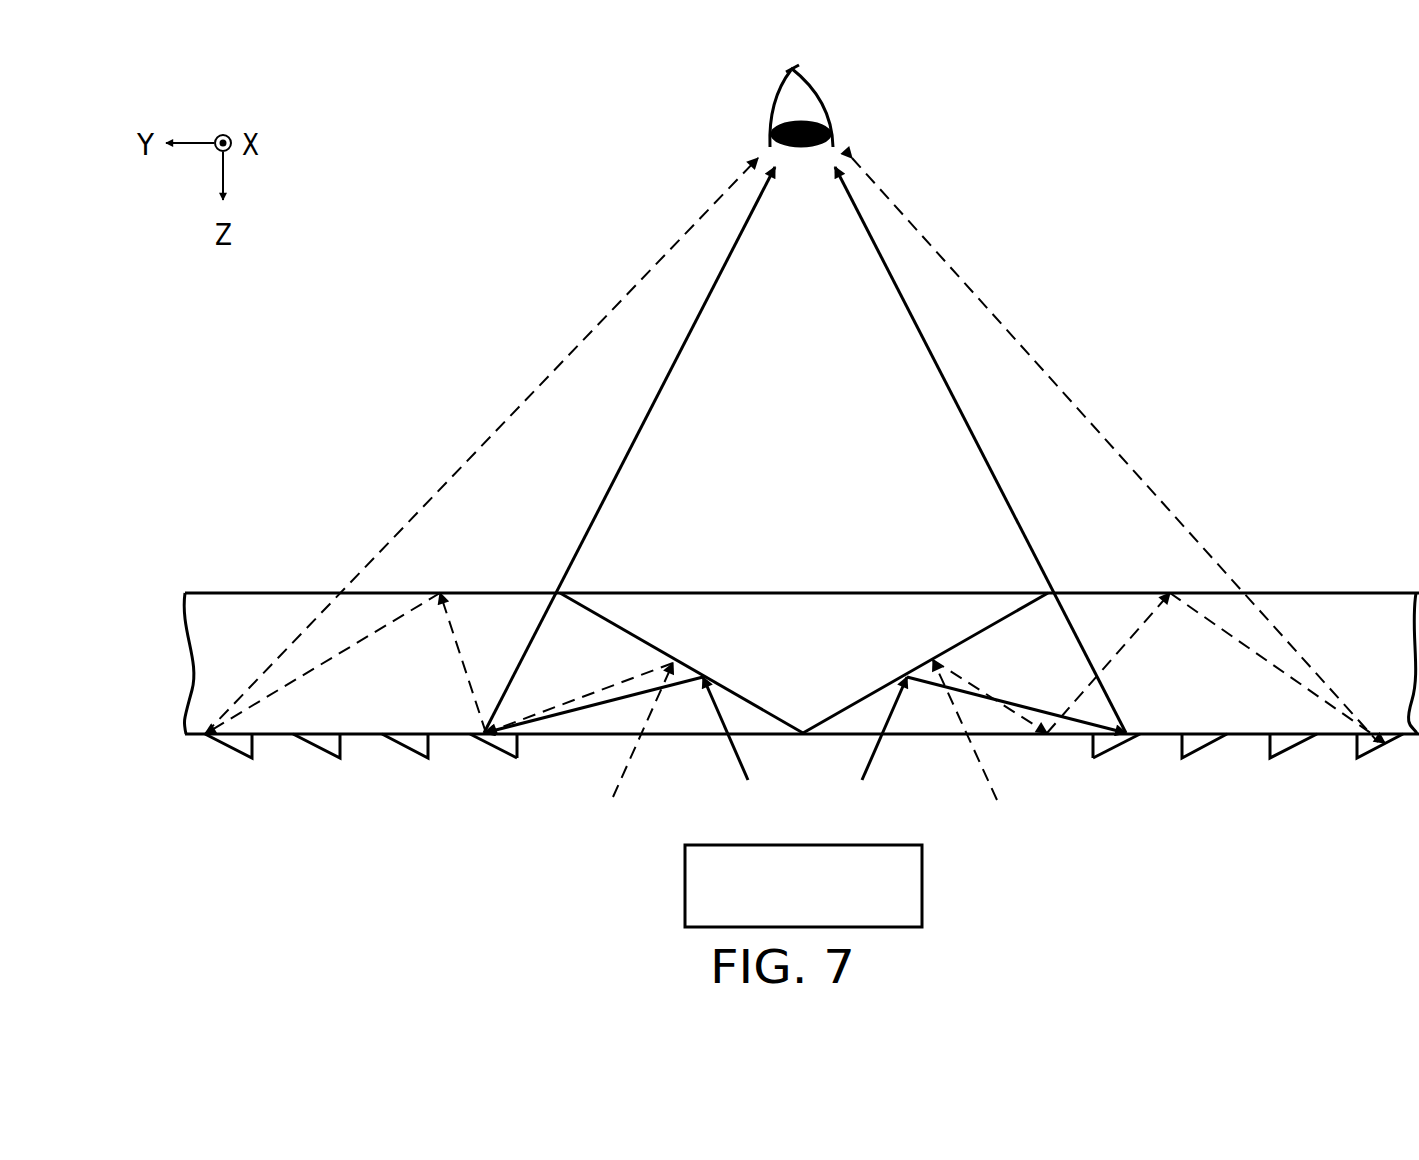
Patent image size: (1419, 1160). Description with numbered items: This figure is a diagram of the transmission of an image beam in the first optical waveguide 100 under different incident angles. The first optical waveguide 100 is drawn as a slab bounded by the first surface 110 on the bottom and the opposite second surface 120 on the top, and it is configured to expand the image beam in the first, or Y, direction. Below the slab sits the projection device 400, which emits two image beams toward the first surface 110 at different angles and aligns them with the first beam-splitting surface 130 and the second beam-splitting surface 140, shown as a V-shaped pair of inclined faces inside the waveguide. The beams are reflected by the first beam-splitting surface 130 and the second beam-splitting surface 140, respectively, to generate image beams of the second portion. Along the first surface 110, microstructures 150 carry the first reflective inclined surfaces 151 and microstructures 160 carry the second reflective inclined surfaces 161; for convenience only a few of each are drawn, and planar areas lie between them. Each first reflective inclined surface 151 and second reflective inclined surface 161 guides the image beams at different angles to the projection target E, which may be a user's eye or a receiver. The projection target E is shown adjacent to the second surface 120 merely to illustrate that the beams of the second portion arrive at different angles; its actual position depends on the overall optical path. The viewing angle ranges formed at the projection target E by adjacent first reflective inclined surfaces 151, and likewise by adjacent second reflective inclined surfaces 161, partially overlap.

The first optical waveguide 100 is at (763, 692).
The first surface 110 is at (199, 741).
The second surface 120 is at (206, 589).
The first beam-splitting surface 130 is at (783, 733).
The second beam-splitting surface 140 is at (828, 733).
The microstructure 150 is at (506, 789).
The first reflective inclined surface 151 is at (515, 748).
The microstructure 160 is at (1096, 789).
The second reflective inclined surface 161 is at (1113, 753).
The projection device 400 is at (922, 883).
The projection target E is at (817, 105).